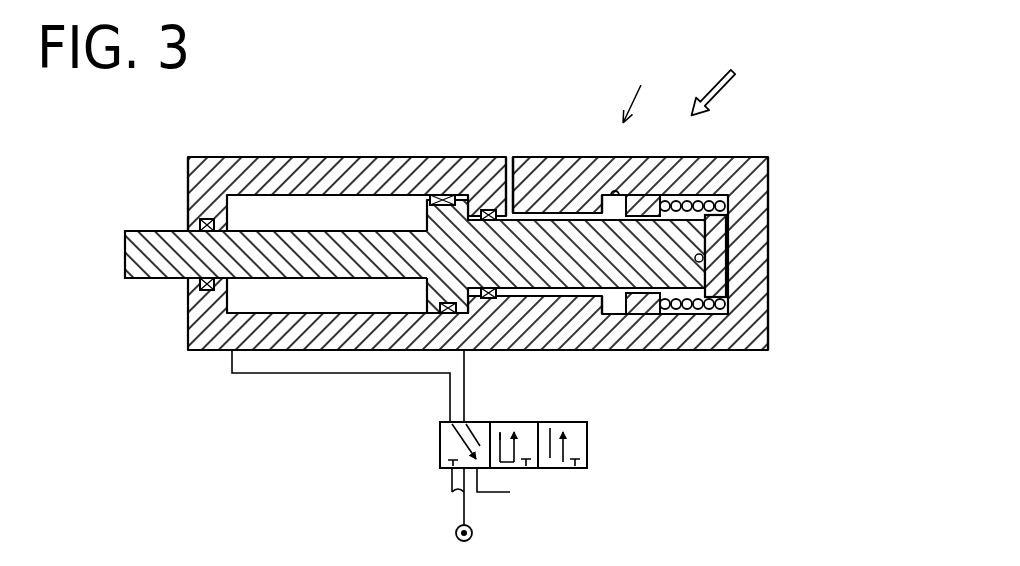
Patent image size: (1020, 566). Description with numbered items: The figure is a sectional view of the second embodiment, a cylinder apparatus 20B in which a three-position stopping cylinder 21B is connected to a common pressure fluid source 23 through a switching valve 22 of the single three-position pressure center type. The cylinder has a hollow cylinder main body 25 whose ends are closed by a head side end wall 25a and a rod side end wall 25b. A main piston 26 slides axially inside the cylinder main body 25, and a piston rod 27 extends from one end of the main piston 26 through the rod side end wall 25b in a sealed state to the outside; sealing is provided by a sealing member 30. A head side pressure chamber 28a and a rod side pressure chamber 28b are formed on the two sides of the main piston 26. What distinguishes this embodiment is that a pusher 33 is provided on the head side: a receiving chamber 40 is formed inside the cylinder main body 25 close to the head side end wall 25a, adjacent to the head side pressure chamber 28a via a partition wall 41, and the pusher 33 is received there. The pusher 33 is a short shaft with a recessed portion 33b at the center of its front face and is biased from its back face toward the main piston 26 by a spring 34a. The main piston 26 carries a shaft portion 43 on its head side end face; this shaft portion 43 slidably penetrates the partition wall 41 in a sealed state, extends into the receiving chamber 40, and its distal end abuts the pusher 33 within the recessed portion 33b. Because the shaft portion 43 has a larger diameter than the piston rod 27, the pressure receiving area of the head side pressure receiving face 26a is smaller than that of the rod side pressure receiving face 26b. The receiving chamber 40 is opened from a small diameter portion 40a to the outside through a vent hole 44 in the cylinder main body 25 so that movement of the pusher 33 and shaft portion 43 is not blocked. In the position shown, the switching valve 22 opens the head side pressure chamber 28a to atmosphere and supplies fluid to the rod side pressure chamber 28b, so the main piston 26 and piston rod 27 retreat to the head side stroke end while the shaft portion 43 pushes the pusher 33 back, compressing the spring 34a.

The cylinder apparatus 20B is at (732, 83).
The 3-position stopping cylinder 21B is at (645, 87).
The switching valve 22 is at (533, 468).
The pressure fluid source 23 is at (473, 533).
The cylinder main body 25 is at (310, 178).
The head side end wall 25a is at (758, 190).
The rod side end wall 25b is at (200, 176).
The main piston 26 is at (437, 198).
The head side pressure receiving face 26a is at (472, 305).
The rod side pressure receiving face 26b is at (422, 284).
The piston rod 27 is at (153, 245).
The head side pressure chamber 28a is at (463, 199).
The rod side pressure chamber 28b is at (264, 208).
The sealing member 30 is at (203, 296).
The pusher 33 is at (718, 233).
The recessed portion 33b is at (715, 270).
The spring 34a is at (716, 200).
The receiving chamber 40 is at (619, 197).
The small diameter portion 40a is at (577, 214).
The partition wall 41 is at (499, 214).
The shaft portion 43 is at (597, 263).
The vent hole 44 is at (523, 188).